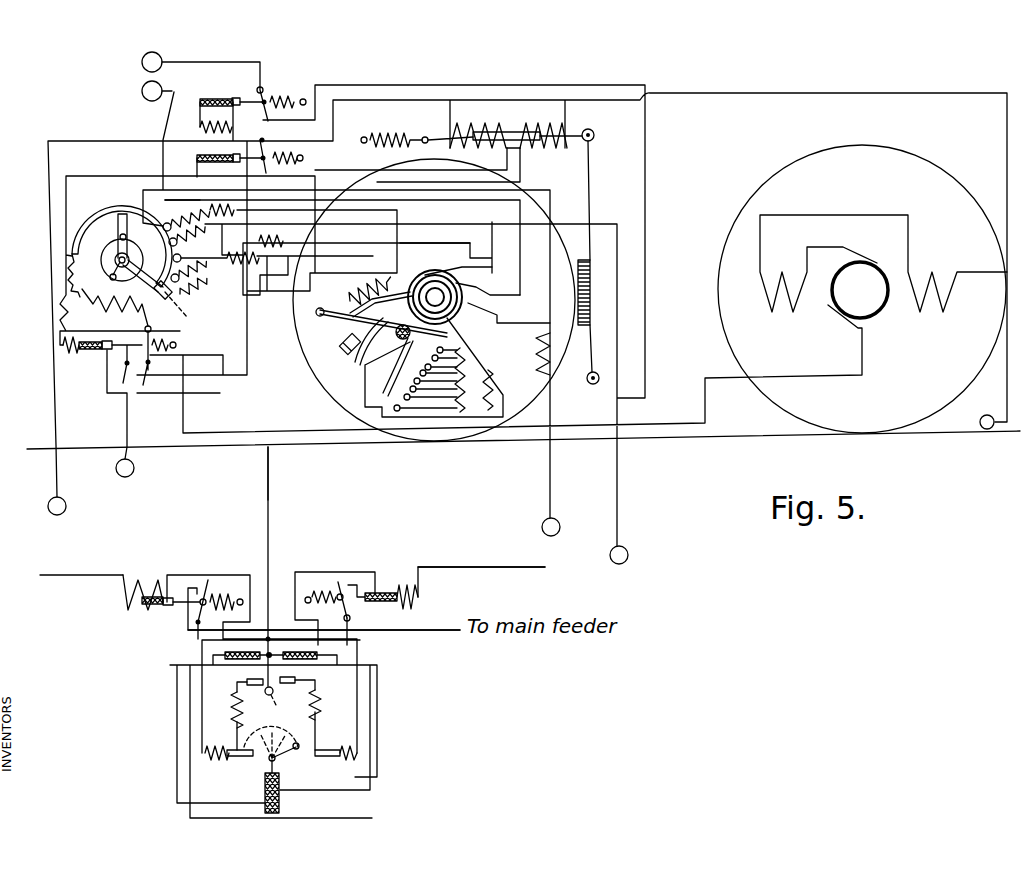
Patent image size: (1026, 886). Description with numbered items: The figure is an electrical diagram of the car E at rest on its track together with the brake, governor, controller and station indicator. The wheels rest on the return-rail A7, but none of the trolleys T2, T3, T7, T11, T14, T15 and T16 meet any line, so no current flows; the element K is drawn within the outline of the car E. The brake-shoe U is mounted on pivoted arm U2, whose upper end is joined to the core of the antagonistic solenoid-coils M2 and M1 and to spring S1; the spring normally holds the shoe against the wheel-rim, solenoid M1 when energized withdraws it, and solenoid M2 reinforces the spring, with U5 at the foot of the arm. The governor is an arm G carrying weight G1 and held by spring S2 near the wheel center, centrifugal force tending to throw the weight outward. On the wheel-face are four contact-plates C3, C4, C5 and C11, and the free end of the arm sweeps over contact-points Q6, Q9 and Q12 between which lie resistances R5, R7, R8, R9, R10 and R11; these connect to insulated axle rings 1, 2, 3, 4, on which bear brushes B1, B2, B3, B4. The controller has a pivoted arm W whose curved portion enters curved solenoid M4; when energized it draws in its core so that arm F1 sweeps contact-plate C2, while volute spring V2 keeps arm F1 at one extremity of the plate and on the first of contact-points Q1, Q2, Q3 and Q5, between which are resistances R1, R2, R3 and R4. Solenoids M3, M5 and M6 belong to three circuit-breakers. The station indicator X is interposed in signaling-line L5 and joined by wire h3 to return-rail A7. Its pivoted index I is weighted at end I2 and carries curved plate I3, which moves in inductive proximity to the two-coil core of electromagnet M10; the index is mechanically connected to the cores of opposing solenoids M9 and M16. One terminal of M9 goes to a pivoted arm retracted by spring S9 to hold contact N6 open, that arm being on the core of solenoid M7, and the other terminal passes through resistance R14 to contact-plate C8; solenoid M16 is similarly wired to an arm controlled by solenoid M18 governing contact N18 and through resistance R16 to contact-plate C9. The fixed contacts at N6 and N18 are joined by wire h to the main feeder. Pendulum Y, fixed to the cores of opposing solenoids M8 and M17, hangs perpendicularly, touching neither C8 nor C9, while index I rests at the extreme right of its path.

The car E is at (851, 289).
The armature K is at (857, 301).
The terminal T7 is at (981, 414).
The return-rail A7 is at (523, 445).
The terminal T2 is at (162, 55).
The terminal T3 is at (148, 100).
The circuit-breaker solenoid M5 is at (253, 106).
The circuit-breaker solenoid M3 is at (235, 160).
The spring S1 is at (394, 132).
The solenoid-coil M2 is at (485, 125).
The solenoid M1 is at (543, 125).
The arm U2 is at (592, 183).
The brake-shoe U is at (593, 292).
The contact U5 is at (579, 377).
The pivoted arm W is at (120, 249).
The volute spring V2 is at (127, 253).
The pendulum Y is at (65, 256).
The arm F1 is at (169, 303).
The curved solenoid M4 is at (116, 311).
The circuit-breaker solenoid M6 is at (119, 354).
The contact-plate C2 is at (160, 222).
The contact-point Q5 is at (182, 203).
The resistance R4 is at (201, 222).
The resistance R3 is at (192, 238).
The contact-point Q3 is at (216, 261).
The resistance R2 is at (193, 272).
The contact-point Q2 is at (178, 282).
The resistance R1 is at (196, 294).
The contact-point Q1 is at (192, 318).
The terminal T16 is at (68, 506).
The terminal T14 is at (138, 468).
The terminal T11 is at (563, 518).
The terminal T15 is at (631, 550).
The wire h3 is at (278, 480).
The insulated ring 1 is at (435, 297).
The governor arm G is at (322, 316).
The weight G1 is at (384, 357).
The spring S2 is at (370, 291).
The contact-plate C4 is at (342, 351).
The contact-plate C11 is at (358, 364).
The contact-plate C5 is at (393, 367).
The contact-point Q9 is at (412, 378).
The contact-plate C3 is at (382, 385).
The contact-point Q12 is at (383, 410).
The contact-point Q6 is at (448, 343).
The resistance R5 is at (470, 371).
The resistance R7 is at (469, 358).
The resistance R8 is at (491, 383).
The resistance R10 is at (472, 376).
The resistance R9 is at (489, 393).
The resistance R11 is at (460, 393).
The brush B4 is at (435, 252).
The brush B3 is at (458, 265).
The brush B2 is at (488, 285).
The brush B1 is at (509, 313).
The insulated ring 2 is at (451, 330).
The insulated ring 3 is at (460, 312).
The insulated ring 4 is at (462, 302).
The solenoid M18 is at (148, 606).
The contact N18 is at (210, 582).
The contact N6 is at (342, 578).
The spring S9 is at (325, 614).
The solenoid M7 is at (391, 579).
The signaling-line L5 is at (481, 557).
The wire h is at (324, 638).
The indicator X is at (418, 713).
The solenoid M17 is at (242, 665).
The solenoid M8 is at (301, 664).
The contact-plate C9 is at (247, 703).
The contact-plate C8 is at (280, 694).
The resistance R14 is at (312, 698).
The resistance R16 is at (254, 712).
The weighted end I2 is at (276, 736).
The index I is at (288, 752).
The curved plate I3 is at (268, 757).
The solenoid M16 is at (228, 762).
The solenoid M9 is at (336, 743).
The electromagnet M10 is at (281, 800).